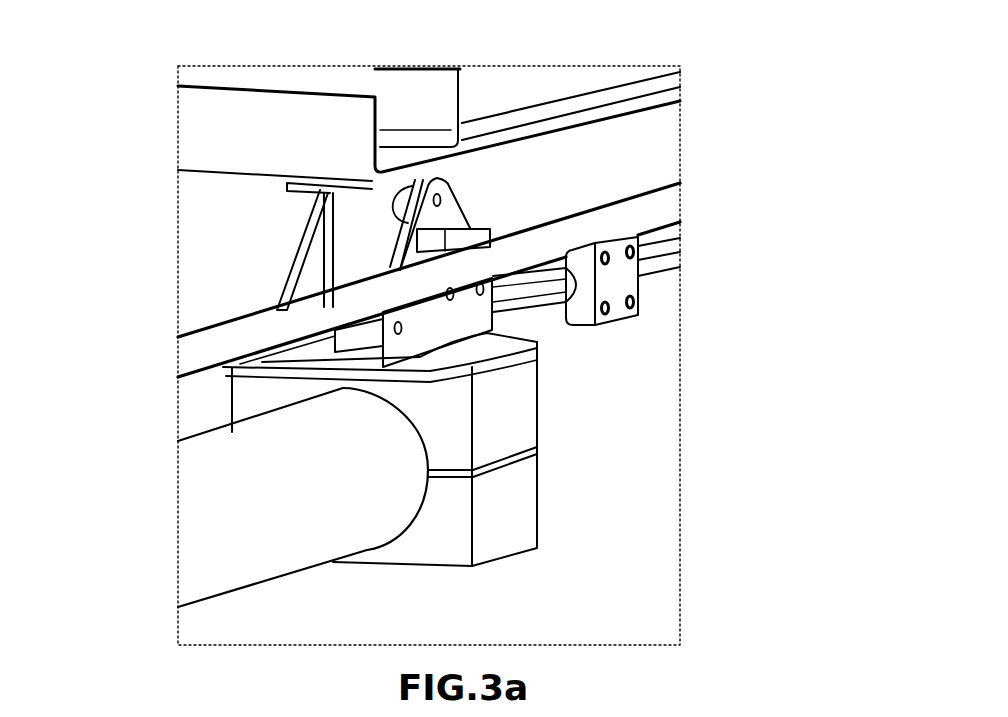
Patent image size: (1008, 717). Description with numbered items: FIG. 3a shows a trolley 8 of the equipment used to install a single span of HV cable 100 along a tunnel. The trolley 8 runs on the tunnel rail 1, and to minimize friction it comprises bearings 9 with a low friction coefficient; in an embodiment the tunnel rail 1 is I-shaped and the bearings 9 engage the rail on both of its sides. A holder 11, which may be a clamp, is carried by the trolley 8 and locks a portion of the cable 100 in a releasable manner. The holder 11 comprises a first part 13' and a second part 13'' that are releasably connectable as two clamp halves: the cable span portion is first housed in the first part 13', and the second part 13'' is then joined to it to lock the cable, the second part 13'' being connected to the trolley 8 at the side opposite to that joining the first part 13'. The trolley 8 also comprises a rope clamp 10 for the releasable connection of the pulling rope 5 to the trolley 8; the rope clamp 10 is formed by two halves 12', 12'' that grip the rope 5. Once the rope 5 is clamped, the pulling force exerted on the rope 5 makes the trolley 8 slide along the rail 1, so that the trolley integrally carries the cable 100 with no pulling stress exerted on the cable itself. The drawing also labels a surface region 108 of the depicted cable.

The tunnel rail 1 is at (482, 130).
The pulling rope 5 is at (187, 358).
The trolley 8 is at (557, 373).
The bearings 9 is at (403, 197).
The rope clamp 10 is at (643, 296).
The holder 11 is at (543, 449).
The first half of the rope clamp 12' is at (561, 136).
The second half of the rope clamp 12'' is at (651, 220).
The first part of the holder 13' is at (599, 506).
The second part of the holder 13'' is at (667, 417).
The HV cable 100 is at (258, 530).
The workpiece surface 108 is at (232, 473).